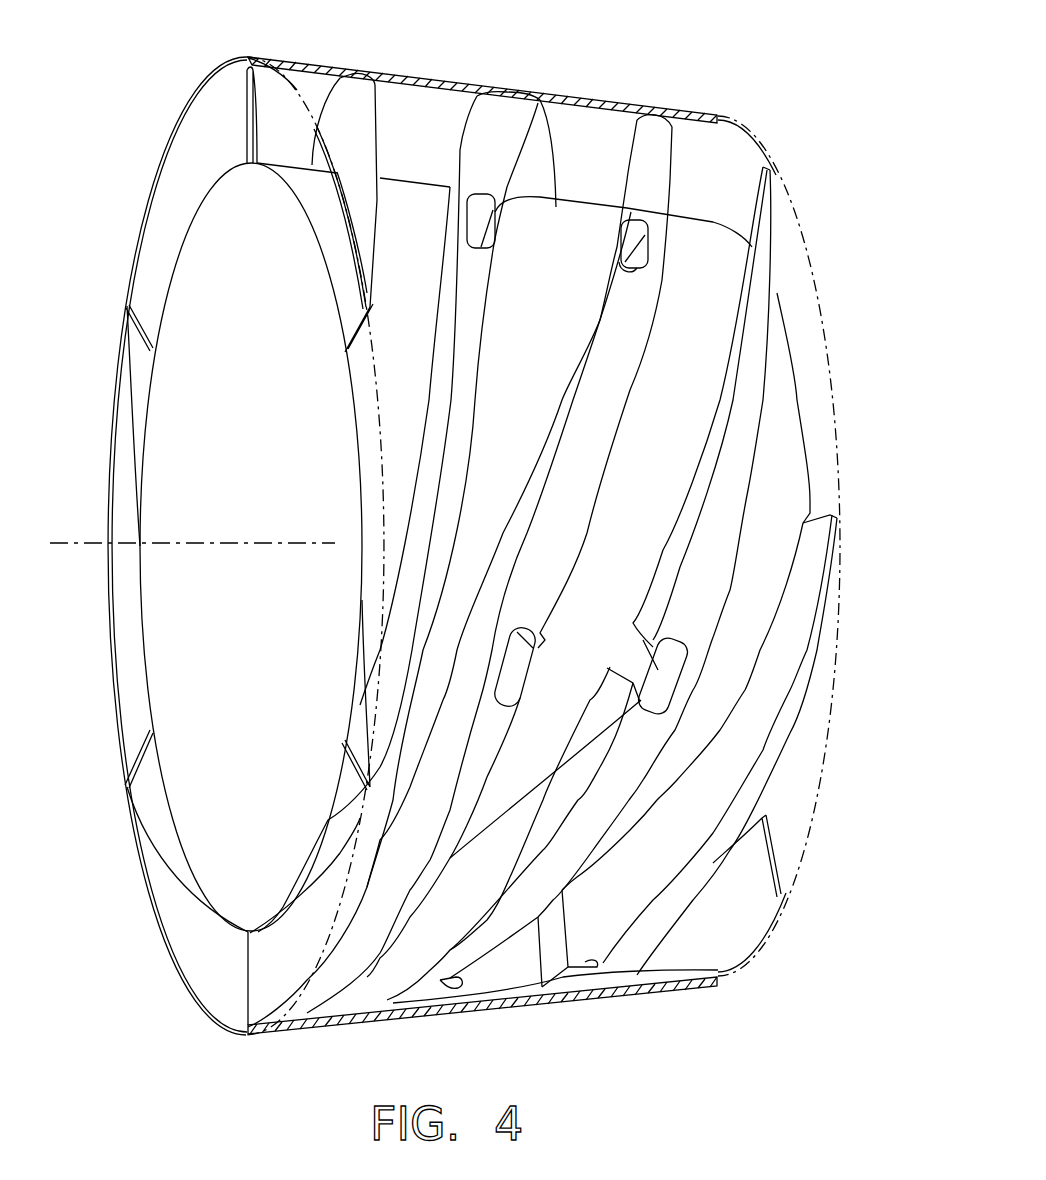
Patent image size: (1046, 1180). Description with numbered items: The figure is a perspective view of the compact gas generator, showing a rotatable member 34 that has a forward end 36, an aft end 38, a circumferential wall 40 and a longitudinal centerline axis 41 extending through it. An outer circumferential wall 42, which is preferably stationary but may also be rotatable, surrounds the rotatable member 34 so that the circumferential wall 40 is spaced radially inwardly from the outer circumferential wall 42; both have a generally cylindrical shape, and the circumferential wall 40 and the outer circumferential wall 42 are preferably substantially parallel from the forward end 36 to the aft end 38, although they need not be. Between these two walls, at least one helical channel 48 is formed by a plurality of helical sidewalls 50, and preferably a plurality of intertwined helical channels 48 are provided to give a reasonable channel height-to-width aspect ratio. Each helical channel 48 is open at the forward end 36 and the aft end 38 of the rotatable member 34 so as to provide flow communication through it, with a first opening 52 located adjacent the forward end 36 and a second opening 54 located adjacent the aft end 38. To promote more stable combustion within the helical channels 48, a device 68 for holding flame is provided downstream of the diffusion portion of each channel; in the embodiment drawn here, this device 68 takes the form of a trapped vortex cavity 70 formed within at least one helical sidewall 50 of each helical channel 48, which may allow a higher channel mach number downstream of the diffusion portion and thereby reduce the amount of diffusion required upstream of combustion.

The rotatable member 34 is at (720, 52).
The forward end 36 is at (182, 964).
The aft end 38 is at (792, 903).
The circumferential wall 40 is at (609, 208).
The longitudinal centerline axis 41 is at (256, 544).
The outer circumferential wall 42 is at (483, 78).
The helical channel 48 is at (420, 228).
The helical sidewalls 50 is at (470, 348).
The first opening 52 is at (362, 367).
The second opening 54 is at (785, 812).
The device for holding flame 68 is at (637, 278).
The trapped vortex cavity 70 is at (620, 255).